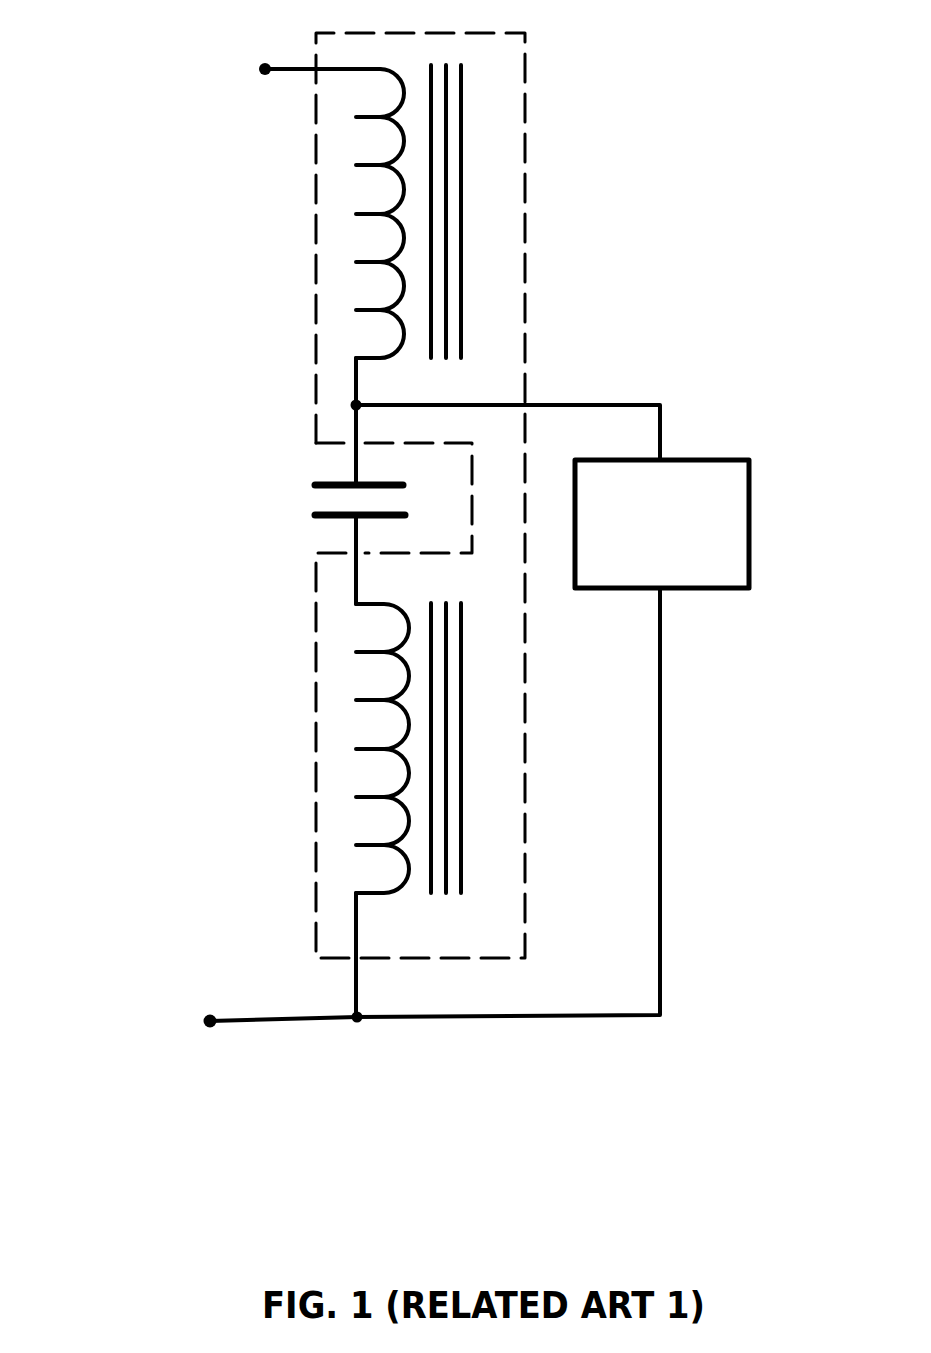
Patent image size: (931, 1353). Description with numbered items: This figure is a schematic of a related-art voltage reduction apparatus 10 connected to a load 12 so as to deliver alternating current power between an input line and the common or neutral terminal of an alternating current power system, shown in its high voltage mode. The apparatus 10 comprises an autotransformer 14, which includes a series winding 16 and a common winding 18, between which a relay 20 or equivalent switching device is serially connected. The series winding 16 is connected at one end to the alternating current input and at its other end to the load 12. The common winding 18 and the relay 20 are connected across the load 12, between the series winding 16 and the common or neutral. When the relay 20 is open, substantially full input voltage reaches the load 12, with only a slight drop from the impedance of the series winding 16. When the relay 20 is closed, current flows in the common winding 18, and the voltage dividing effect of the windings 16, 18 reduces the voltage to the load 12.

The voltage reduction apparatus 10 is at (203, 522).
The load 12 is at (749, 516).
The autotransformer 14 is at (525, 139).
The series winding 16 is at (376, 218).
The common winding 18 is at (368, 740).
The relay 20 is at (328, 483).